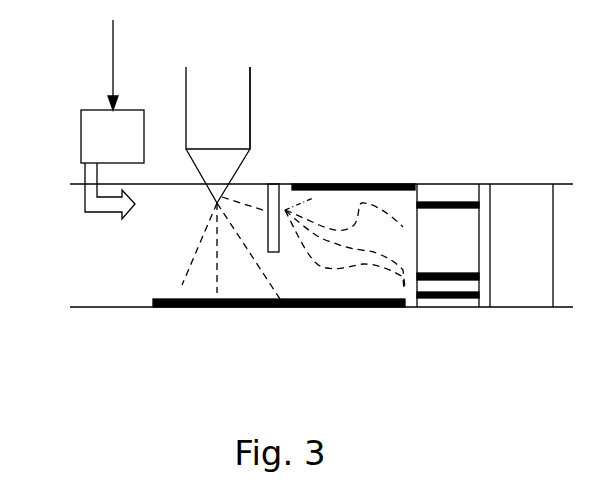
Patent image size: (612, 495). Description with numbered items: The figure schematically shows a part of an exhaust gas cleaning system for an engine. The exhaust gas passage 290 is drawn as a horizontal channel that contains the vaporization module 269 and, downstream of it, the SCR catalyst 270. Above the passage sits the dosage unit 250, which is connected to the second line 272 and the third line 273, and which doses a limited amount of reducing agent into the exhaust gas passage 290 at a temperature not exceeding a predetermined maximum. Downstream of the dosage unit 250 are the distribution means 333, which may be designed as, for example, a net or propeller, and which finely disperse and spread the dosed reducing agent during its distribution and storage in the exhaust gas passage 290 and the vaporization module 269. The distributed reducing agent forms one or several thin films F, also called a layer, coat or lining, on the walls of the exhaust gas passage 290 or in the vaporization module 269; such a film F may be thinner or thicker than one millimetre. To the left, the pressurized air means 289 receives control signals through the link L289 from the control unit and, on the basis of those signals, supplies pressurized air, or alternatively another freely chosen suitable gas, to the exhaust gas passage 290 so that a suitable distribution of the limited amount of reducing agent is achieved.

The pressurized air means 289 is at (112, 164).
The link L289 is at (113, 45).
The third line 273 is at (186, 66).
The second line 272 is at (250, 67).
The dosage unit 250 is at (231, 149).
The distribution means 333 is at (270, 180).
The thin film F is at (330, 172).
The vaporization module 269 is at (448, 245).
The SCR catalyst 270 is at (521, 245).
The exhaust gas passage 290 is at (103, 309).